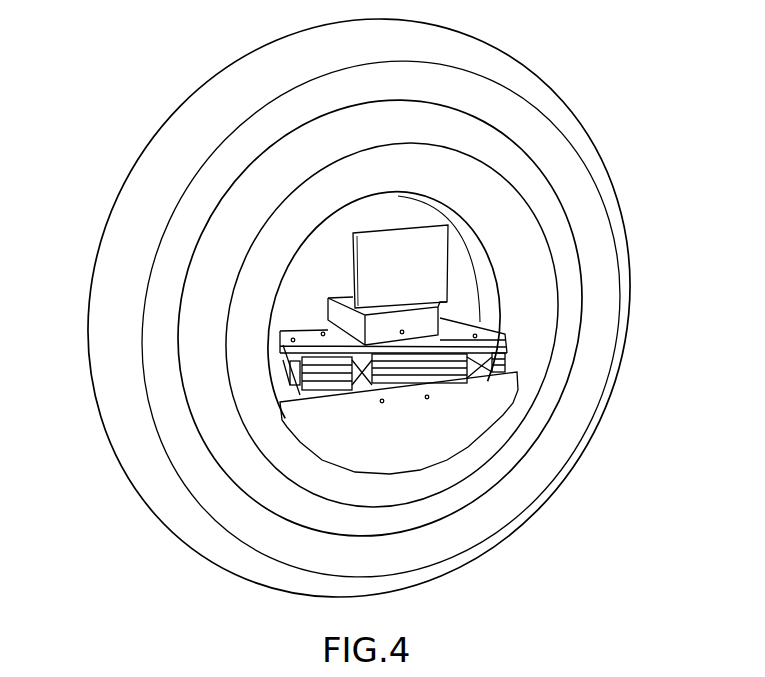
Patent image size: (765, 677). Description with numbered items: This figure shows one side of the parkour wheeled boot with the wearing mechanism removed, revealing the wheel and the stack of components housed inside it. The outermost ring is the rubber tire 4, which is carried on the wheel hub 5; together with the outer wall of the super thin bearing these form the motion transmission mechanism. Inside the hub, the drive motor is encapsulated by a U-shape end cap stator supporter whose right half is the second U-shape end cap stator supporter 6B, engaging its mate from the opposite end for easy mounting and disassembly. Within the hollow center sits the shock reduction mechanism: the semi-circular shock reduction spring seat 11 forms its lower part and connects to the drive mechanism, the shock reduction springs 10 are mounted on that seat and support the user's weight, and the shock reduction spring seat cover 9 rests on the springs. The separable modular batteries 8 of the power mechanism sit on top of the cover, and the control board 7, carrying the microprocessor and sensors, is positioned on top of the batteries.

The rubber tire 4 is at (115, 355).
The wheel hub 5 is at (223, 247).
The second U-shape end cap stator supporter 6B is at (340, 192).
The control board 7 is at (437, 257).
The batteries 8 is at (445, 304).
The shock reduction spring seat cover 9 is at (507, 331).
The shock reduction springs 10 is at (483, 365).
The semi-circular shock reduction spring seat 11 is at (443, 420).